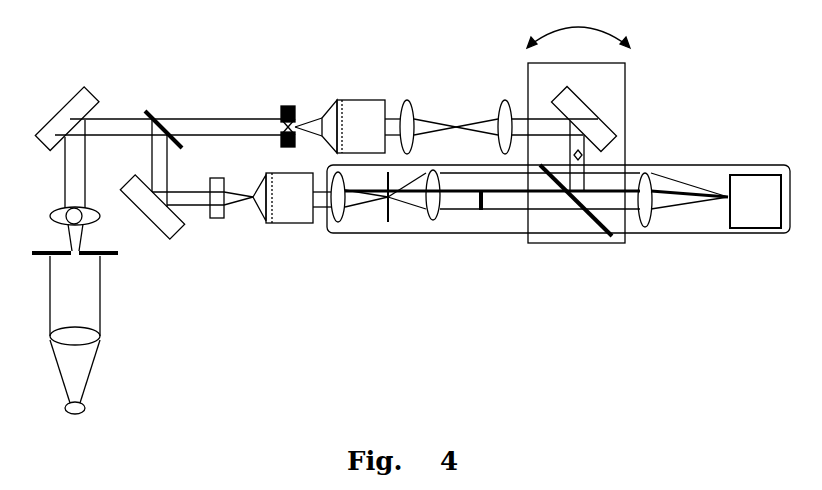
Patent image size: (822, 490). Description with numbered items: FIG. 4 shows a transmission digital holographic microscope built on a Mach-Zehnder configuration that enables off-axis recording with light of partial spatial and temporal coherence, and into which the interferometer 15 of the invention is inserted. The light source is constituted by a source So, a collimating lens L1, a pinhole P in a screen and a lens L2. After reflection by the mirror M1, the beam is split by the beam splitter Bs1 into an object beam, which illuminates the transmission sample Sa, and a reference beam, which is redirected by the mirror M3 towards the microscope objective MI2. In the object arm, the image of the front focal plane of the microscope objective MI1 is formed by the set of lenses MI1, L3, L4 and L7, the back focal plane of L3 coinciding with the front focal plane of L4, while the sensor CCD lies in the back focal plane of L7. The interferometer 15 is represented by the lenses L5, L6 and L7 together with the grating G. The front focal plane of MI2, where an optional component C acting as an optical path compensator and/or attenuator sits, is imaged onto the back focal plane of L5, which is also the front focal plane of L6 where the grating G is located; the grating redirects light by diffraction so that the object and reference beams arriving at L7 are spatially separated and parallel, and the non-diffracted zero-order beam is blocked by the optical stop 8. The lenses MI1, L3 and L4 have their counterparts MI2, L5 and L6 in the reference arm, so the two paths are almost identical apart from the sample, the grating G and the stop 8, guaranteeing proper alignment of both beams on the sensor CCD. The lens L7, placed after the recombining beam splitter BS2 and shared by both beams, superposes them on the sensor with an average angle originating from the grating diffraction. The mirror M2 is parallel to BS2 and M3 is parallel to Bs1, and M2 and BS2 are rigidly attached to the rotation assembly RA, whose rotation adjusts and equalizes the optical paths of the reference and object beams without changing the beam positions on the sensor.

The interferometer of the invention 15 is at (670, 165).
The optical stop 8 is at (485, 210).
The illumination source So is at (100, 420).
The collimating lens L1 is at (98, 362).
The pinhole in a screen P is at (67, 294).
The lens L2 is at (53, 229).
The mirror M1 is at (62, 106).
The beam splitter Bs1 is at (161, 113).
The mirror M3 is at (155, 221).
The optional component C is at (229, 221).
The microscope objective MI2 is at (285, 220).
The transmission sample or sample holder Sa is at (279, 80).
The microscope objective MI1 is at (355, 107).
The lens L3 is at (412, 107).
The lens L4 is at (499, 107).
The rotation assembly RA is at (578, 135).
The mirror M2 is at (589, 112).
The lens L5 is at (345, 218).
The grating G is at (393, 218).
The lens L6 is at (439, 217).
The beam splitter BS2 is at (575, 201).
The lens L7 is at (668, 218).
The CCD sensor CCD is at (749, 183).